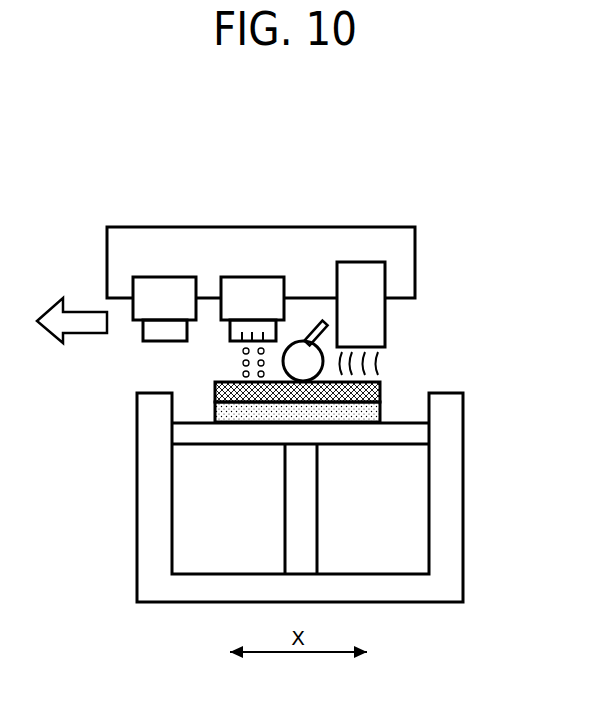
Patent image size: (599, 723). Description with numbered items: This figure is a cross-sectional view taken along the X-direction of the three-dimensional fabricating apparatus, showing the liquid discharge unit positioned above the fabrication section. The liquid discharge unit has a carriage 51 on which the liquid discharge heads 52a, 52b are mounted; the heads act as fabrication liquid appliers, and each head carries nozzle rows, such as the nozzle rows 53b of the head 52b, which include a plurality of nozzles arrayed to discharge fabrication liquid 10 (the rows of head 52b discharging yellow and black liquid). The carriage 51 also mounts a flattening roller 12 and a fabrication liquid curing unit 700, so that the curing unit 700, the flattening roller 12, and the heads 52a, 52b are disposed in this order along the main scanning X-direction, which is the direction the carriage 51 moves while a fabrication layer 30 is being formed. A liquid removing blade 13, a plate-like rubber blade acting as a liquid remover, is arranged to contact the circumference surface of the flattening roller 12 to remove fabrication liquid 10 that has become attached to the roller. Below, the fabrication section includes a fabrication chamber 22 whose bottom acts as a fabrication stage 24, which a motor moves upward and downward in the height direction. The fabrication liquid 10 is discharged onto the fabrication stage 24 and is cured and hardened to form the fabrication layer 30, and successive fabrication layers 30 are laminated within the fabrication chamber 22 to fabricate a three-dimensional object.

The fabrication liquid 10 is at (240, 375).
The flattening roller 12 is at (303, 340).
The liquid removing blade 13 is at (322, 320).
The fabrication chamber 22 is at (455, 497).
The fabrication stage 24 is at (363, 435).
The fabrication layer 30 is at (218, 417).
The carriage 51 is at (110, 262).
The liquid discharge head 52a is at (165, 328).
The liquid discharge head 52b is at (253, 327).
The nozzle row 53b is at (242, 351).
The fabrication liquid curing unit 700 is at (360, 273).